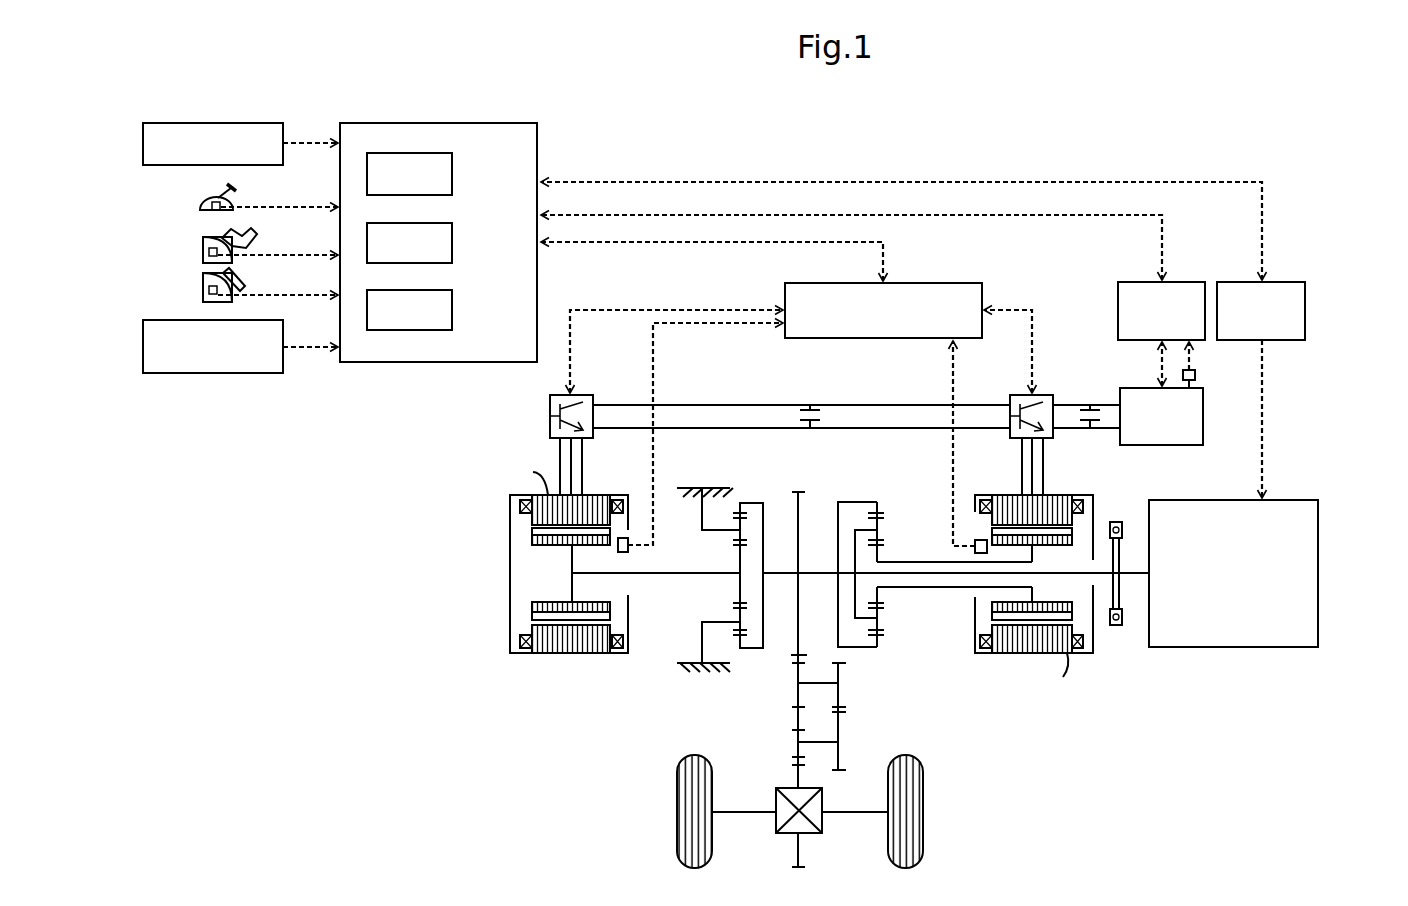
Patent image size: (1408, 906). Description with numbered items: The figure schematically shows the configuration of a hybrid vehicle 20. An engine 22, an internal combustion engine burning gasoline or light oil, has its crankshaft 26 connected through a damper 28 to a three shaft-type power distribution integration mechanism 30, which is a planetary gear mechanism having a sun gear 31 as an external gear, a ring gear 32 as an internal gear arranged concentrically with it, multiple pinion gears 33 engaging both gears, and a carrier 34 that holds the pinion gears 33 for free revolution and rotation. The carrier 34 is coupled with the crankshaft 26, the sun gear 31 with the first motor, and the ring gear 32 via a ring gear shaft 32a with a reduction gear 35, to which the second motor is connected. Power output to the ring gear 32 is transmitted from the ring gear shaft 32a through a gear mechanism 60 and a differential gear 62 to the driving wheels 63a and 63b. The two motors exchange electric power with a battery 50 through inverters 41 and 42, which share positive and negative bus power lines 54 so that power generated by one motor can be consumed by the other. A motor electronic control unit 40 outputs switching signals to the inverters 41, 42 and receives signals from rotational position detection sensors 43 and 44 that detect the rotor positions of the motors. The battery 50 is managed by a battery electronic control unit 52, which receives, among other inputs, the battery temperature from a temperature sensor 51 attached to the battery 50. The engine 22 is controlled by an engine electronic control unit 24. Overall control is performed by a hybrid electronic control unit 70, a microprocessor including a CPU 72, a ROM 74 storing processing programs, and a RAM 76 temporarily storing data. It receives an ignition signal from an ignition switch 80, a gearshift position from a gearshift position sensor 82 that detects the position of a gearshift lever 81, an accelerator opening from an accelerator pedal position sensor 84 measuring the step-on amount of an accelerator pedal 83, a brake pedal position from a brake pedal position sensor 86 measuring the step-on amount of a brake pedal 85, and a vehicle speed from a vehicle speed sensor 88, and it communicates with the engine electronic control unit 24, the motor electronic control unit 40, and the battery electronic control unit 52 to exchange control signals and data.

The hybrid vehicle 20 is at (1062, 153).
The engine 22 is at (1318, 558).
The engine electronic control unit 24 is at (1280, 282).
The crankshaft 26 is at (1132, 575).
The damper 28 is at (1122, 625).
The power distribution integration mechanism 30 is at (880, 488).
The sun gear 31 is at (880, 590).
The ring gear 32 is at (880, 641).
The ring gear shaft 32a is at (785, 572).
The pinion gears 33 is at (880, 615).
The carrier 34 is at (853, 538).
The reduction gear 35 is at (742, 482).
The motor electronic control unit 40 is at (923, 283).
The inverter 41 is at (1048, 393).
The inverter 42 is at (578, 395).
The rotational position detection sensor 43 is at (978, 540).
The rotational position detection sensor 44 is at (623, 538).
The battery 50 is at (1165, 447).
The temperature sensor 51 is at (1195, 373).
The battery electronic control unit 52 is at (1137, 282).
The power lines 54 is at (863, 427).
The gear mechanism 60 is at (882, 724).
The differential gear 62 is at (822, 822).
The driving wheel 63a is at (673, 845).
The driving wheel 63b is at (923, 845).
The hybrid electronic control unit 70 is at (438, 122).
The CPU 72 is at (452, 172).
The ROM 74 is at (452, 243).
The RAM 76 is at (452, 310).
The ignition switch 80 is at (143, 135).
The gearshift lever 81 is at (228, 189).
The gearshift position sensor 82 is at (205, 206).
The accelerator pedal 83 is at (226, 236).
The accelerator pedal position sensor 84 is at (207, 255).
The brake pedal 85 is at (228, 279).
The brake pedal position sensor 86 is at (207, 294).
The vehicle speed sensor 88 is at (143, 338).